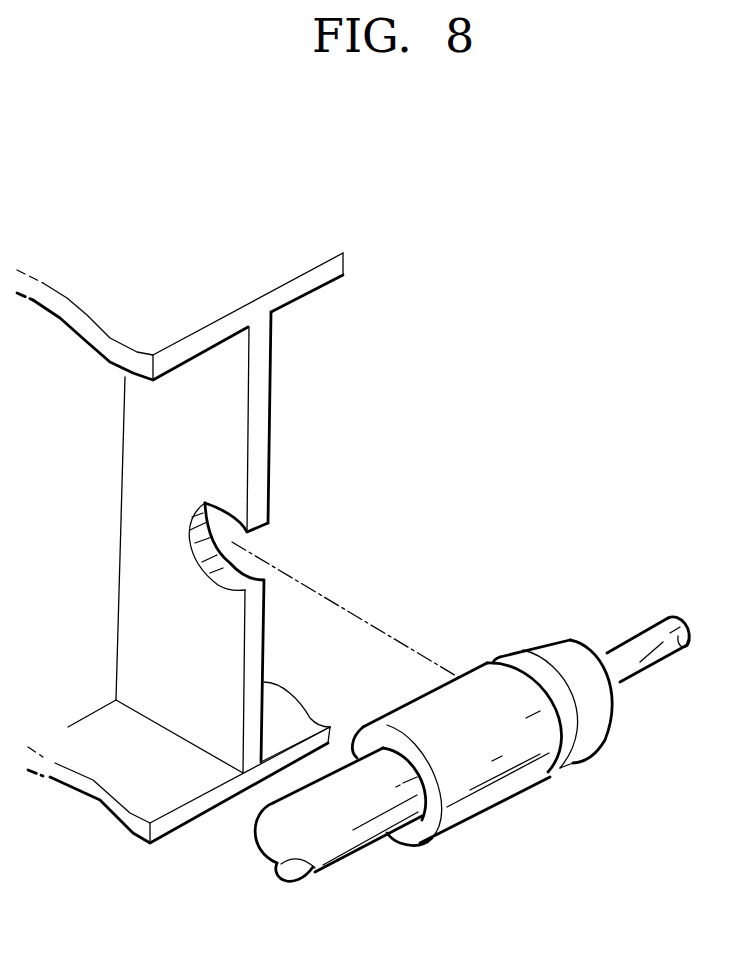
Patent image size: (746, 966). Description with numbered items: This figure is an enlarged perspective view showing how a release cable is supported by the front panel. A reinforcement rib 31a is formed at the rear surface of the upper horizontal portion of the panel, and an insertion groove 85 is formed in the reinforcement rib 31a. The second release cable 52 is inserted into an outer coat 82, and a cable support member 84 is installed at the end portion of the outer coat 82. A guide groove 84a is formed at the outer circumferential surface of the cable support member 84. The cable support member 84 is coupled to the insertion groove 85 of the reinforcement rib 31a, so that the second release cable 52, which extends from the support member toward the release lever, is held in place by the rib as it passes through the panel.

The bracket 31a is at (193, 548).
The hole 85 is at (217, 573).
The rod 82 is at (350, 853).
The bushing 84 is at (497, 797).
The collar 84a is at (562, 742).
The shaft 52 is at (653, 660).